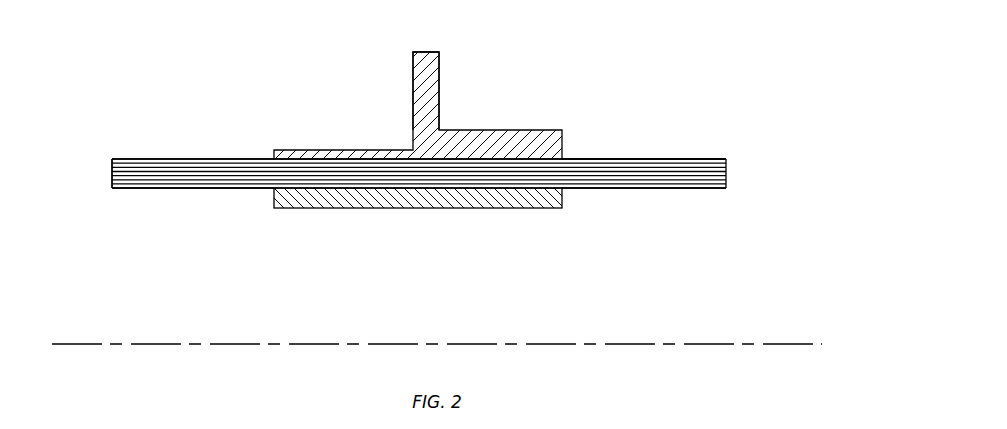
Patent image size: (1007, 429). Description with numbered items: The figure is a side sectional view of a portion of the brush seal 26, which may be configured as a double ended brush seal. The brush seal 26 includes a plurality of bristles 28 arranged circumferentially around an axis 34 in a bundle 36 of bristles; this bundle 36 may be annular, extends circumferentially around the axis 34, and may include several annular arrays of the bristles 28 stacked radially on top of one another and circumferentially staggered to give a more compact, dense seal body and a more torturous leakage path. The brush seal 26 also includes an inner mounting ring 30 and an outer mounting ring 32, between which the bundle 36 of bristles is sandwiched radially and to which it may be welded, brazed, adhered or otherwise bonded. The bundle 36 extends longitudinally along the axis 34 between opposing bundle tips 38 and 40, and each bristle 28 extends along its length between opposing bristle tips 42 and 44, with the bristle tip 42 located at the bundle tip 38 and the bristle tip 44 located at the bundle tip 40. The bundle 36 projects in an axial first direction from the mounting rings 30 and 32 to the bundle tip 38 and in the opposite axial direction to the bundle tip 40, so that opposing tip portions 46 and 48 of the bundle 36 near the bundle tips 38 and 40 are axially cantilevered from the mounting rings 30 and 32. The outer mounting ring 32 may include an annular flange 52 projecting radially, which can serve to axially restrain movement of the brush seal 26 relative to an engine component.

The brush seal 26 is at (419, 152).
The bristles 28 is at (700, 178).
The inner mounting ring 30 is at (483, 214).
The outer mounting ring 32 is at (467, 111).
The axis 34 is at (783, 343).
The bundle of bristles 36 is at (225, 153).
The bundle tip 38 is at (112, 175).
The bundle tip 40 is at (727, 177).
The bristle tip 42 is at (111, 186).
The bristle tip 44 is at (726, 163).
The tip portion 46 is at (138, 199).
The tip portion 48 is at (698, 146).
The annular flange 52 is at (413, 82).